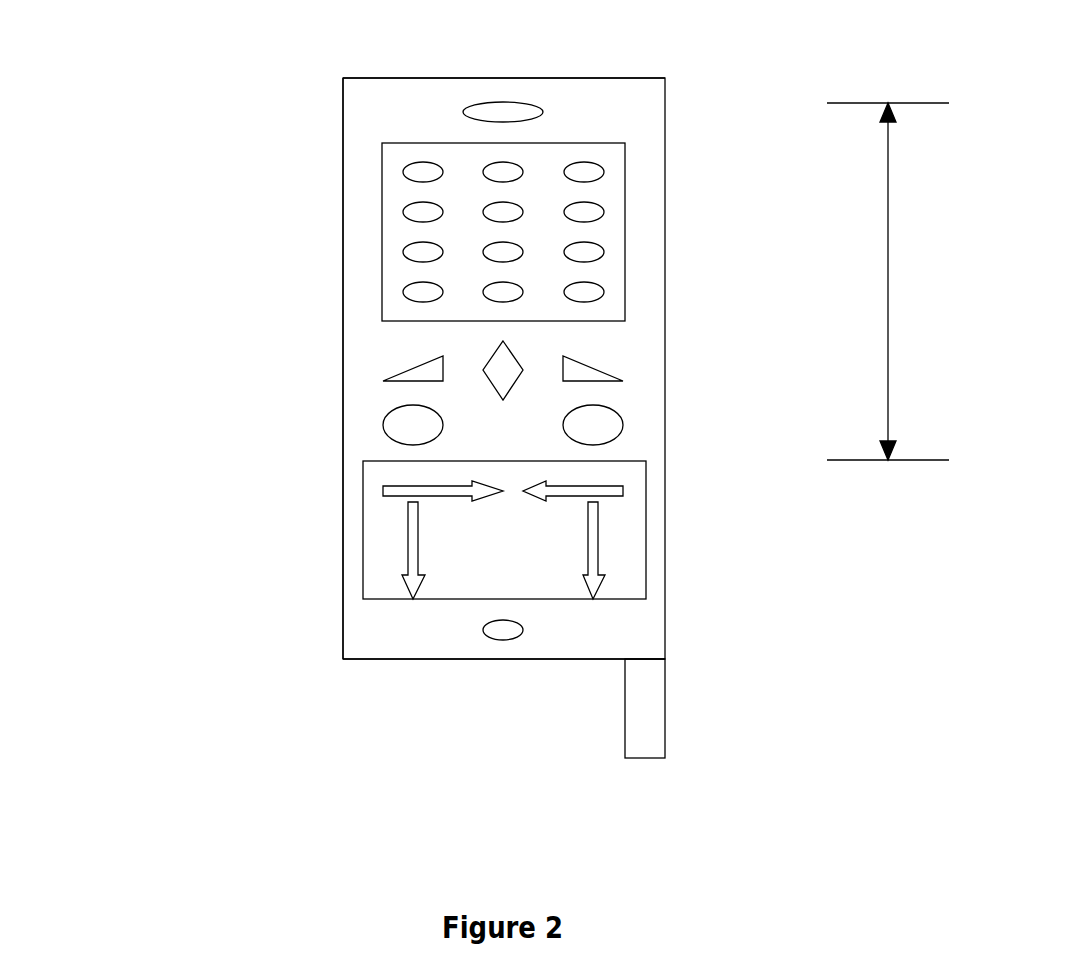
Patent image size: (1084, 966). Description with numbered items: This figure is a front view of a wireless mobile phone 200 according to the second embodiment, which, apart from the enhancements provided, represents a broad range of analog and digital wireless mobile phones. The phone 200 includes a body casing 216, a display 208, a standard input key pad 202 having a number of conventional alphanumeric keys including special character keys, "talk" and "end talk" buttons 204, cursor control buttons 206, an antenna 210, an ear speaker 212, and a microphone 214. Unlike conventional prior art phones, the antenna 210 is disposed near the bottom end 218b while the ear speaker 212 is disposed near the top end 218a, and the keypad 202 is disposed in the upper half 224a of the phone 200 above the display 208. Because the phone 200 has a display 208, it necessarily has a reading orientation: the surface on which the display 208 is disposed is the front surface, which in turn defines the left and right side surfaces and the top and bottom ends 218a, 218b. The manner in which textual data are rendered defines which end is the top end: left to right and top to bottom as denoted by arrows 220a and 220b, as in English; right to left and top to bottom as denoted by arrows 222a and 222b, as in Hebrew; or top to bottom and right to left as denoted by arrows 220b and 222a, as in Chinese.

The phone 200 is at (97, 87).
The standard input key pad 202 is at (382, 203).
The talk and end talk buttons 204 is at (402, 421).
The cursor control buttons 206 is at (384, 382).
The display 208 is at (383, 600).
The antenna 210 is at (645, 718).
The ear speaker 212 is at (543, 104).
The microphone 214 is at (483, 638).
The body casing 216 is at (343, 302).
The top end 218a is at (403, 78).
The bottom end 218b is at (543, 659).
The arrow 220a is at (383, 486).
The arrow 220b is at (403, 539).
The arrow 222a is at (605, 478).
The arrow 222b is at (607, 542).
The upper half 224a is at (882, 253).